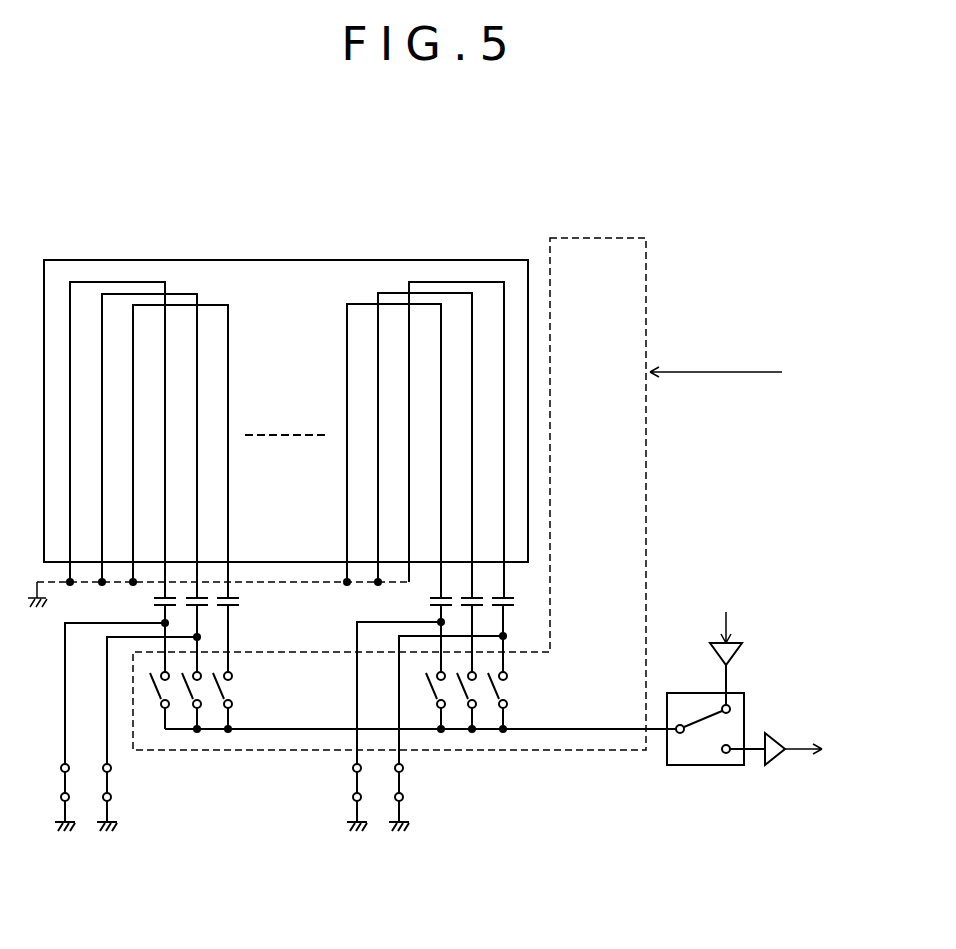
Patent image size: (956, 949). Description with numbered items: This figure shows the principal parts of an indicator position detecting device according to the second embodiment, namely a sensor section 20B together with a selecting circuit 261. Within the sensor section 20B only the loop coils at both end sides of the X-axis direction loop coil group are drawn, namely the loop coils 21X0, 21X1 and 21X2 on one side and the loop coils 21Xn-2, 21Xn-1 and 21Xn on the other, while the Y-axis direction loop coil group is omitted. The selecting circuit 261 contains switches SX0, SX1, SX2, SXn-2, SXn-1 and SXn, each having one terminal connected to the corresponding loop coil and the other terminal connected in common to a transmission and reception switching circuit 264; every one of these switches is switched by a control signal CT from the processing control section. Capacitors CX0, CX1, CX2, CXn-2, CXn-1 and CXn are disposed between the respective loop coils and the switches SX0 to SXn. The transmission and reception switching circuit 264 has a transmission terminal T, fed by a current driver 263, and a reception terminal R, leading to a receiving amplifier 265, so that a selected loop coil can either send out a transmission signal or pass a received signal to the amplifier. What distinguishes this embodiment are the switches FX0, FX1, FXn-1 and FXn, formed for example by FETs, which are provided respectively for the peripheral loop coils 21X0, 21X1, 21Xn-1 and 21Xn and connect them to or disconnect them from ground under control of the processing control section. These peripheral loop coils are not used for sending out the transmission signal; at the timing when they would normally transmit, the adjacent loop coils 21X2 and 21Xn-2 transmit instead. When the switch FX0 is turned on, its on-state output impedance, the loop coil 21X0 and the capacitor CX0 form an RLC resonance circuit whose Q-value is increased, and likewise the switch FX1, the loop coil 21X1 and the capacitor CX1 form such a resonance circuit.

The sensor section 20B is at (100, 152).
The loop coil 21X0 is at (112, 282).
The loop coil 21X1 is at (180, 294).
The loop coil 21X2 is at (217, 305).
The loop coil 21Xn-2 is at (357, 304).
The loop coil 21Xn-1 is at (398, 293).
The loop coil 21Xn is at (488, 282).
The selecting circuit 261 is at (601, 236).
The capacitor CX0 is at (153, 600).
The capacitor CX1 is at (202, 598).
The capacitor CX2 is at (240, 601).
The capacitor CXn-2 is at (428, 600).
The capacitor CXn-1 is at (477, 597).
The capacitor CXn is at (512, 601).
The switch SX0 is at (155, 702).
The switch SX1 is at (185, 702).
The switch SX2 is at (222, 702).
The switch SXn-2 is at (428, 702).
The switch SXn-1 is at (458, 702).
The switch SXn is at (490, 702).
The switch FX0 is at (60, 782).
The switch FX1 is at (102, 782).
The switch FXn-1 is at (352, 782).
The switch FXn is at (392, 782).
The control signal CT is at (716, 386).
The transmission terminal T is at (722, 706).
The reception terminal R is at (725, 755).
The current driver 263 is at (745, 656).
The transmission and reception switching circuit 264 is at (675, 766).
The receiving amplifier 265 is at (782, 766).